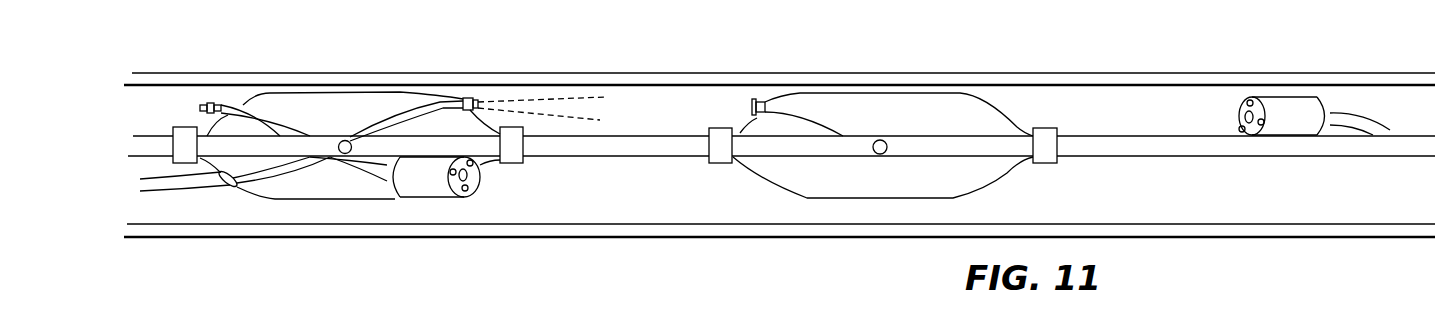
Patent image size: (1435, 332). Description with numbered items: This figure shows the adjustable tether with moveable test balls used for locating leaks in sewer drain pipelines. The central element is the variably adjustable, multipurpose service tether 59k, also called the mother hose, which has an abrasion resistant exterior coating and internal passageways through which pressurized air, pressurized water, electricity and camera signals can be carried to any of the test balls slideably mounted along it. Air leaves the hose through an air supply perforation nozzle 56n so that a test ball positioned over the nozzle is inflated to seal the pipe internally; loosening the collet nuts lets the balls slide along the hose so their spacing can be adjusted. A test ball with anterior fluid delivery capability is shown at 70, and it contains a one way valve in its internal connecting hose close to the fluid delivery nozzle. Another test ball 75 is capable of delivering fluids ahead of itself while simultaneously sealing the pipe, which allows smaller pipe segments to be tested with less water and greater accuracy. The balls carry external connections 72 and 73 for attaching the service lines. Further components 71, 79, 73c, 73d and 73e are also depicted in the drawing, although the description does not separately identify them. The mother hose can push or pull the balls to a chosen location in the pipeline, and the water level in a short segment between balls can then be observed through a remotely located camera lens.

The external connection 73 is at (208, 102).
The air supply perforation nozzle 56n is at (343, 140).
The test ball with anterior fluid delivery capability 70 is at (476, 98).
The shaft 79 is at (617, 146).
The service tether 59k is at (667, 135).
The hose connector 73d is at (780, 107).
The motor 73e is at (1292, 105).
The wires 71 is at (175, 188).
The external connection 72 is at (231, 188).
The test ball 75 is at (325, 193).
The motor 73c is at (432, 188).